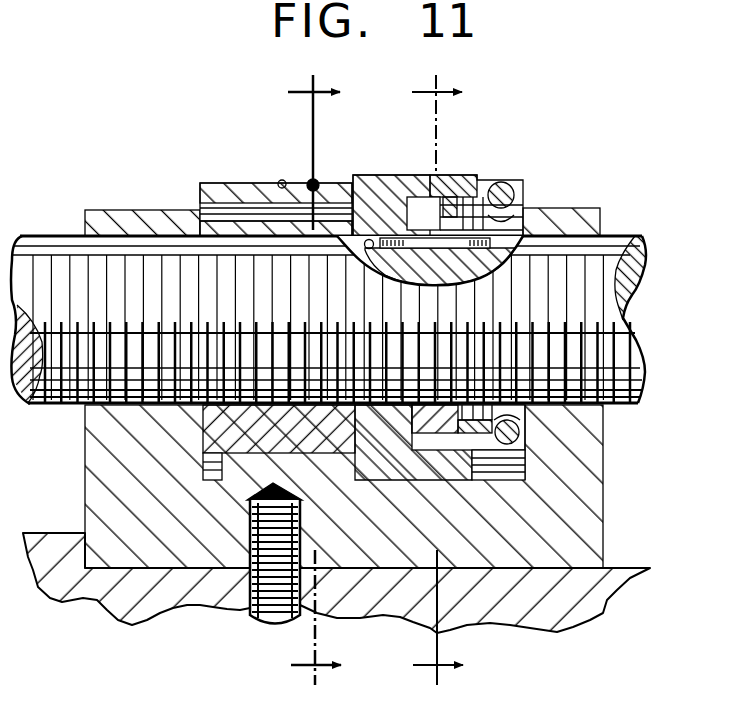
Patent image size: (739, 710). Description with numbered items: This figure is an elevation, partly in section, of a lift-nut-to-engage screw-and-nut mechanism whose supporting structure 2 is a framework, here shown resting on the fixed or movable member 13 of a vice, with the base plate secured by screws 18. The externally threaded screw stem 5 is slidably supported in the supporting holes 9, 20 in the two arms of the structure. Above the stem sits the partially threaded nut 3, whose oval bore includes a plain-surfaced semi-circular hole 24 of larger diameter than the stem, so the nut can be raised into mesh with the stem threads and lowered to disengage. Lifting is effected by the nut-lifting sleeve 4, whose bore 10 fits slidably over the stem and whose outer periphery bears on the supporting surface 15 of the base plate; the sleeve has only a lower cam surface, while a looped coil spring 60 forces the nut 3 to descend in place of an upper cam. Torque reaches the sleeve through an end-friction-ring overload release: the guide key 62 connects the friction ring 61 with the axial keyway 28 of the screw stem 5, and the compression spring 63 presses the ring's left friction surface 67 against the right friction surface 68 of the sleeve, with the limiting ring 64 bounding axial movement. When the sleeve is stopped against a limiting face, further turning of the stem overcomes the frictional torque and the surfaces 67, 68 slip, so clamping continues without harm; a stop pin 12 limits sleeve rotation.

The supporting structure 2 is at (125, 236).
The partially threaded nut 3 is at (220, 190).
The nut-lifting sleeve 4 is at (500, 180).
The screw stem 5 is at (645, 385).
The supporting hole 9 is at (84, 246).
The bore 10 is at (345, 250).
The stop pin 12 is at (333, 380).
The fixed (or movable) member of the vice 13 is at (606, 598).
The supporting surface 15 is at (245, 480).
The screw 18 is at (308, 522).
The supporting hole 20 is at (572, 378).
The semi-circular hole 24 is at (238, 204).
The axial keyway 28 is at (368, 250).
The looped coil spring 60 is at (305, 183).
The friction ring 61 is at (438, 395).
The guide key 62 is at (410, 212).
The compression spring 63 is at (472, 452).
The limiting ring 64 is at (528, 222).
The left friction surface 67 is at (415, 428).
The right friction surface 68 is at (432, 395).